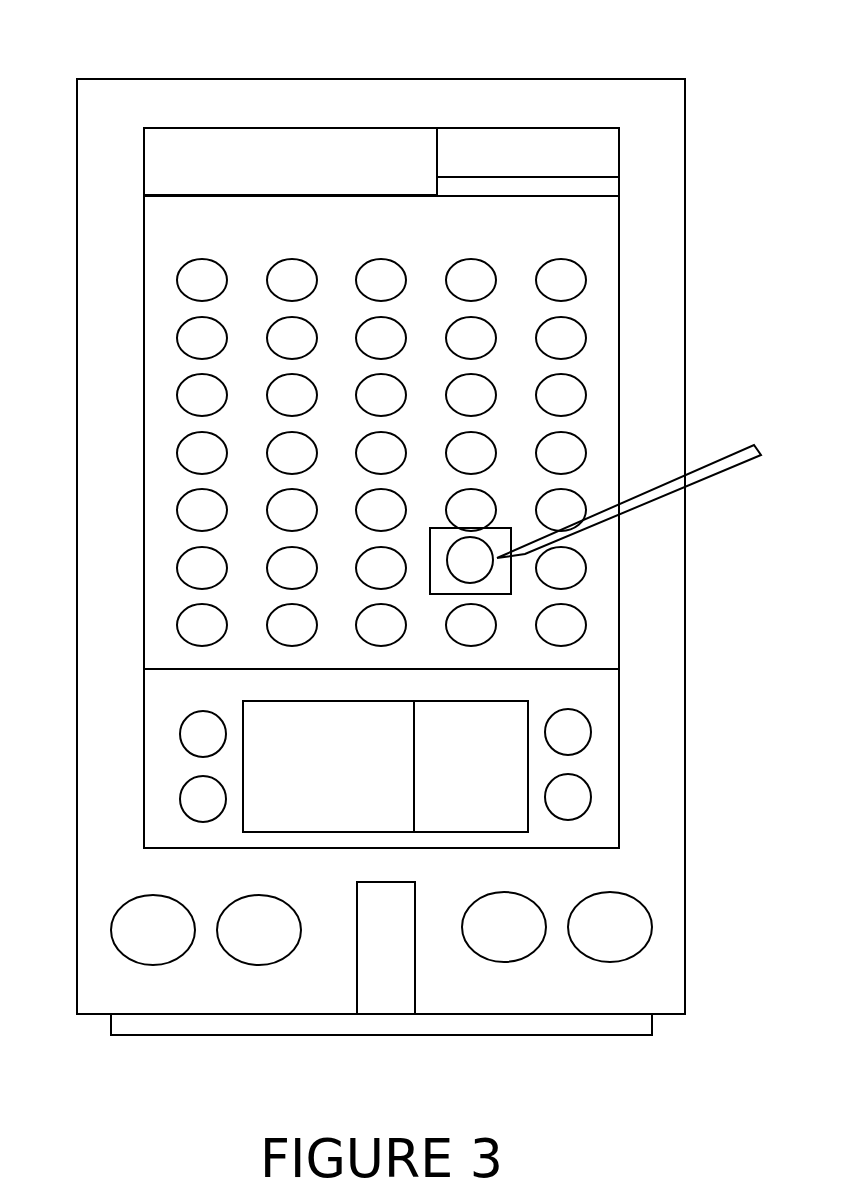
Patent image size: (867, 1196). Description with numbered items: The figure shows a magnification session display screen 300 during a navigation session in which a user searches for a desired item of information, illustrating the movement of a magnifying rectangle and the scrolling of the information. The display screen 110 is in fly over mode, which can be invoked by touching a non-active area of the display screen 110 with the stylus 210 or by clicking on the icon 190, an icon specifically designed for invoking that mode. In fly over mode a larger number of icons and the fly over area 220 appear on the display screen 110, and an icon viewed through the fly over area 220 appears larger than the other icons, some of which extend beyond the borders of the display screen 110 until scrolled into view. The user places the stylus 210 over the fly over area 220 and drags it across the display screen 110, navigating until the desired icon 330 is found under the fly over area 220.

The magnification session display screen 300 is at (46, 27).
The display screen 110 is at (144, 196).
The icon 190 is at (550, 162).
The stylus 210 is at (722, 472).
The fly over area 220 is at (528, 581).
The icon 330 is at (485, 574).